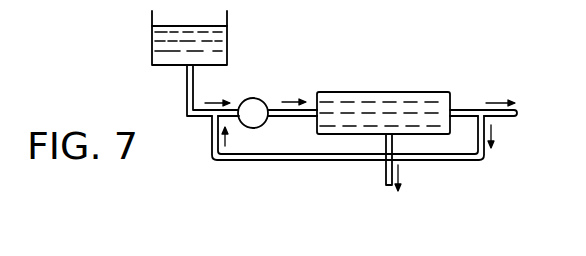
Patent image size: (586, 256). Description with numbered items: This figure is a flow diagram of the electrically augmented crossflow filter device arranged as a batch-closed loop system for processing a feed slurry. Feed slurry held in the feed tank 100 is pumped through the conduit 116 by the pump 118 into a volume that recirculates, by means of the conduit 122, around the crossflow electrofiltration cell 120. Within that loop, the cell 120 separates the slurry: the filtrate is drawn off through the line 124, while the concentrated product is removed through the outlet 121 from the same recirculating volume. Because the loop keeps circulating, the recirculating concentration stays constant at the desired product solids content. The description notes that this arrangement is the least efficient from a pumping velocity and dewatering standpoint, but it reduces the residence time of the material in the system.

The feed tank 100 is at (152, 42).
The conduit 116 is at (270, 102).
The pump 118 is at (263, 124).
The crossflow electrofiltration cell 120 is at (390, 92).
The outlet 121 is at (508, 117).
The conduit 122 is at (307, 160).
The line 124 is at (388, 180).